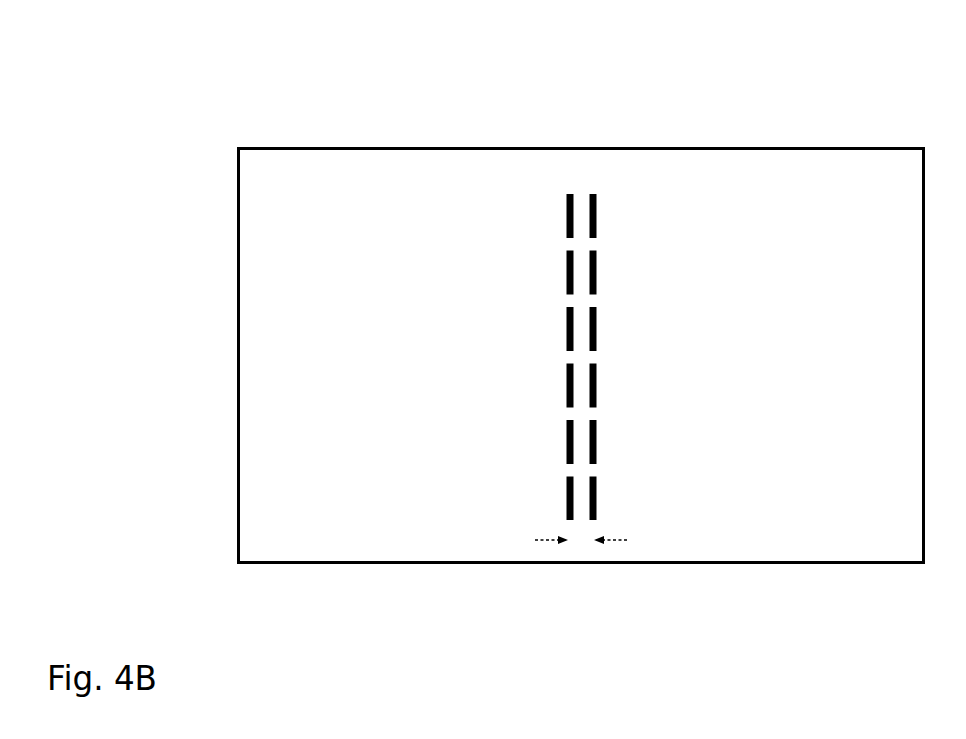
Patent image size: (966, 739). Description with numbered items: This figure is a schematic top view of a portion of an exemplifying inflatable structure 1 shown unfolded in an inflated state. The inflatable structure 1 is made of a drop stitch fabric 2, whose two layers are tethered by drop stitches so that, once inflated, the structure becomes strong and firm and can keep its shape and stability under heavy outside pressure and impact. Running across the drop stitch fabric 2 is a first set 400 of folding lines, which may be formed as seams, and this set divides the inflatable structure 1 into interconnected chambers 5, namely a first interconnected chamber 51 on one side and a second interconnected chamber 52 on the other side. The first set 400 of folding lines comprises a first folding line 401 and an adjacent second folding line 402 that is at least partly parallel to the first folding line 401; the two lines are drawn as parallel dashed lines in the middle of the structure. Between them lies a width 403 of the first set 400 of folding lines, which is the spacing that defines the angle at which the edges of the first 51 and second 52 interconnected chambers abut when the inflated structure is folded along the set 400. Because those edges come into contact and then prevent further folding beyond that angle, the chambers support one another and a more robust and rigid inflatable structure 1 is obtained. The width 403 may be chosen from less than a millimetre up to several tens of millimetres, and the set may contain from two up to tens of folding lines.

The inflatable structure 1 is at (220, 137).
The drop stitch fabric 2 is at (212, 450).
The interconnected chambers 5 is at (581, 138).
The first interconnected chamber 51 is at (370, 172).
The second interconnected chamber 52 is at (718, 175).
The first set of folding lines 400 is at (567, 371).
The first folding line 401 is at (552, 380).
The second folding line 402 is at (607, 380).
The width of the first set of folding lines 403 is at (606, 540).